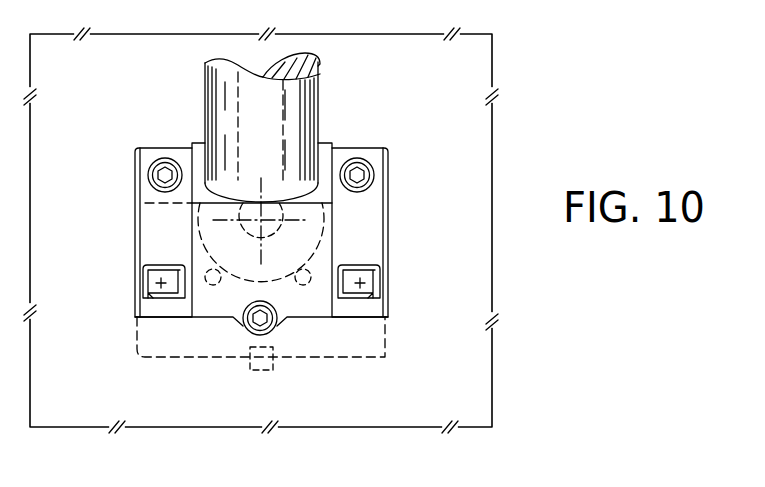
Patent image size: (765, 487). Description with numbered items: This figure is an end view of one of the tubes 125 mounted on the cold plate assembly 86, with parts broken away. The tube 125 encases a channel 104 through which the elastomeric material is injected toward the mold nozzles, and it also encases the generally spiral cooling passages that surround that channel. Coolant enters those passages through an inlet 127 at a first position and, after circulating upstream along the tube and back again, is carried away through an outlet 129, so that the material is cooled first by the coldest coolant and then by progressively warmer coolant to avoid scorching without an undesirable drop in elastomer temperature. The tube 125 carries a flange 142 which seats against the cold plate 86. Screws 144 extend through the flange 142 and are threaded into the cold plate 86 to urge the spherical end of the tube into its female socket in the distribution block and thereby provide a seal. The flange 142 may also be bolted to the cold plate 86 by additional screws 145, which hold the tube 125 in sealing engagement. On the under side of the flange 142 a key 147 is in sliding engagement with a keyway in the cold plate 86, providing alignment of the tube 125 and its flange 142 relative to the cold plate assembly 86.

The cold plate assembly 86 is at (475, 77).
The channel 104 is at (145, 203).
The tube 125 is at (312, 76).
The inlet 127 is at (205, 270).
The outlet 129 is at (312, 272).
The flange 142 is at (355, 232).
The screws 144 is at (150, 158).
The screws 145 is at (160, 283).
The key 147 is at (272, 370).